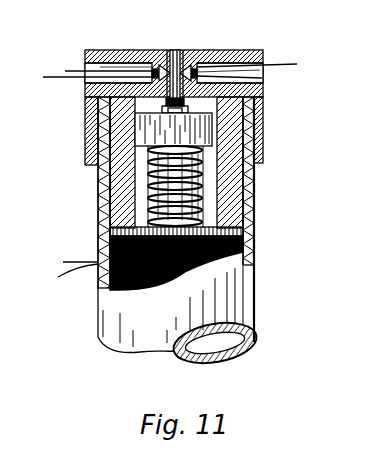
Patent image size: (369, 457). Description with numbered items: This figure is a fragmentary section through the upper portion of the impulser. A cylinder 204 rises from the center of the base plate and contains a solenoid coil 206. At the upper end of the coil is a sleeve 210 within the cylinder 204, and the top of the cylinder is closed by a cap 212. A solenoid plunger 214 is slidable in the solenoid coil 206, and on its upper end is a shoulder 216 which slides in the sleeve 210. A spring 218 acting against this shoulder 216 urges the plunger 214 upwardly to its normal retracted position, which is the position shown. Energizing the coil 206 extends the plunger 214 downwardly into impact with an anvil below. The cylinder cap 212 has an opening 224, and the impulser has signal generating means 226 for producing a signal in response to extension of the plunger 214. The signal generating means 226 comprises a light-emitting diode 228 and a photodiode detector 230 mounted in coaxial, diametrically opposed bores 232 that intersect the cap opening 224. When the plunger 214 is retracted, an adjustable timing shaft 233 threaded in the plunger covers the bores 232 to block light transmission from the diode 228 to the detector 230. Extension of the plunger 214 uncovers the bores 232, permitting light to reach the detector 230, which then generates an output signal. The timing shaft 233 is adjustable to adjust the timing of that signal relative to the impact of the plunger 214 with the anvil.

The cylinder 204 is at (250, 302).
The solenoid coil 206 is at (250, 243).
The sleeve 210 is at (236, 188).
The cap 212 is at (86, 64).
The solenoid plunger 214 is at (150, 206).
The shoulder 216 is at (140, 130).
The spring 218 is at (150, 177).
The opening 224 is at (174, 50).
The signal generating means 226 is at (268, 78).
The light-emitting diode 228 is at (205, 60).
The photodiode detector 230 is at (145, 50).
The bores 232 is at (86, 85).
The adjustable timing shaft 233 is at (167, 62).